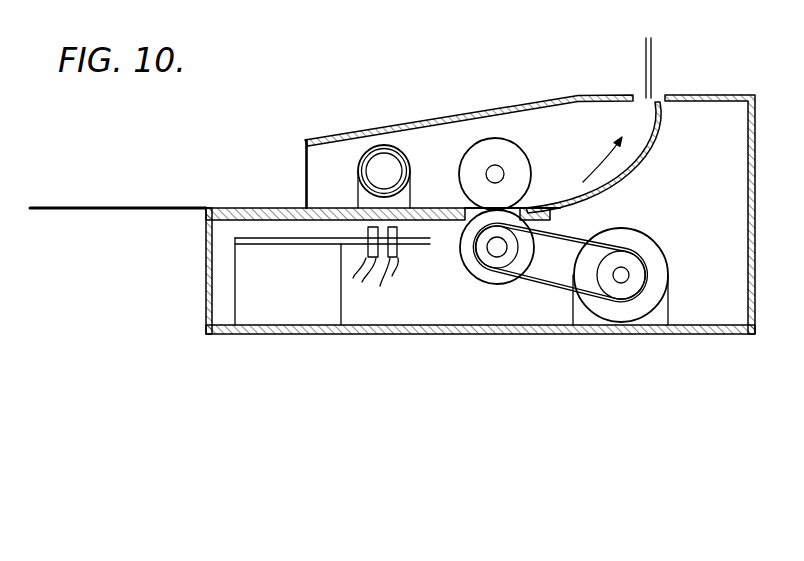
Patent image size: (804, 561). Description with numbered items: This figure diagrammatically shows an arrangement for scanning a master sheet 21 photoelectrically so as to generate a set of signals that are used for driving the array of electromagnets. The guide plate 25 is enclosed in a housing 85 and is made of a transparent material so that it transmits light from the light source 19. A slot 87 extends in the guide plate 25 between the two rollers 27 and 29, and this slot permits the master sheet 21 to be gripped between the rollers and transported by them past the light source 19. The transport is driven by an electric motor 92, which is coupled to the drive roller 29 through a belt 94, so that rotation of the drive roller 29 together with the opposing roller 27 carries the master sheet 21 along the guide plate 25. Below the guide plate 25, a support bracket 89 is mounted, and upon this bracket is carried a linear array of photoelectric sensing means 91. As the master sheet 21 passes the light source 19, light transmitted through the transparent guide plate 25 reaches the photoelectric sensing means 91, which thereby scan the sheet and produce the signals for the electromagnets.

The light source 19 is at (358, 166).
The master sheet 21 is at (122, 204).
The guide plate 25 is at (630, 172).
The roller 27 is at (516, 146).
The drive roller 29 is at (476, 273).
The housing 85 is at (503, 107).
The slot 87 is at (530, 221).
The support bracket 89 is at (441, 237).
The photoelectric sensing means 91 is at (368, 232).
The electric motor 92 is at (657, 252).
The belt 94 is at (553, 283).